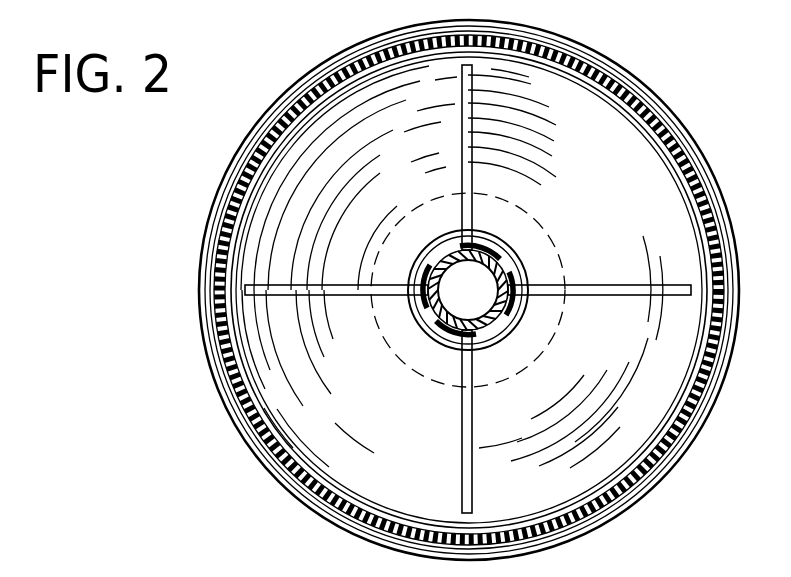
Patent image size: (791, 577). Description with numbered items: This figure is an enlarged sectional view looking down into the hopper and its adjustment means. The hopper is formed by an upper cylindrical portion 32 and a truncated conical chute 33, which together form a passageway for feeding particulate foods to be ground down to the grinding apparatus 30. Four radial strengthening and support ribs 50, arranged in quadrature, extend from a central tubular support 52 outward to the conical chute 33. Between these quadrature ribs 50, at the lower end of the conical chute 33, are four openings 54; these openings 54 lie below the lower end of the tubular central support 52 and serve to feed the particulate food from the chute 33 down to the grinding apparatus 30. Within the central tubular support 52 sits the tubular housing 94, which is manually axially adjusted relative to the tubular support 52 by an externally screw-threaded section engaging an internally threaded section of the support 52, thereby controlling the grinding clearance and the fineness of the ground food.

The grinding apparatus 30 is at (556, 250).
The cylindrical portion of the hopper 32 is at (682, 160).
The truncated conical chute 33 is at (633, 168).
The radial strengthening and support ribs 50 is at (473, 163).
The central tubular support 52 is at (540, 225).
The openings 54 is at (493, 243).
The tubular housing 94 is at (527, 270).